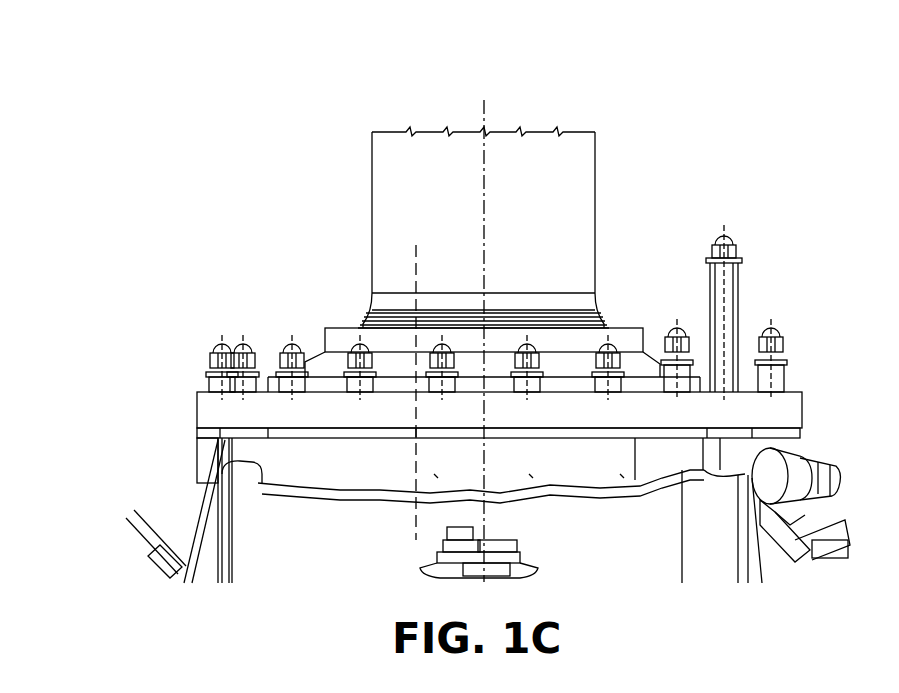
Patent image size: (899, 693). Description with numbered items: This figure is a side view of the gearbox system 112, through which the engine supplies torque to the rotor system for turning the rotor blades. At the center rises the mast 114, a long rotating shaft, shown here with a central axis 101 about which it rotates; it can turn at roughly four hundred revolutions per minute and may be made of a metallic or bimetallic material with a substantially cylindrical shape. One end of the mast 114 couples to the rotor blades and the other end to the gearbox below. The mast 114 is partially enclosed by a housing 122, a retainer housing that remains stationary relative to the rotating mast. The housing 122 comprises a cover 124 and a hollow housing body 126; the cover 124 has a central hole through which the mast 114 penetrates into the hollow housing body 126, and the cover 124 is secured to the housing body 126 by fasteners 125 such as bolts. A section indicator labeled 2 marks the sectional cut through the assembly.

The gearbox system 112 is at (131, 91).
The axis 101 is at (482, 117).
The mast 114 is at (545, 215).
The housing 122 is at (122, 361).
The cover 124 is at (318, 330).
The fasteners 125 is at (212, 342).
The hollow housing body 126 is at (196, 450).
The section line 2- 2 is at (416, 245).